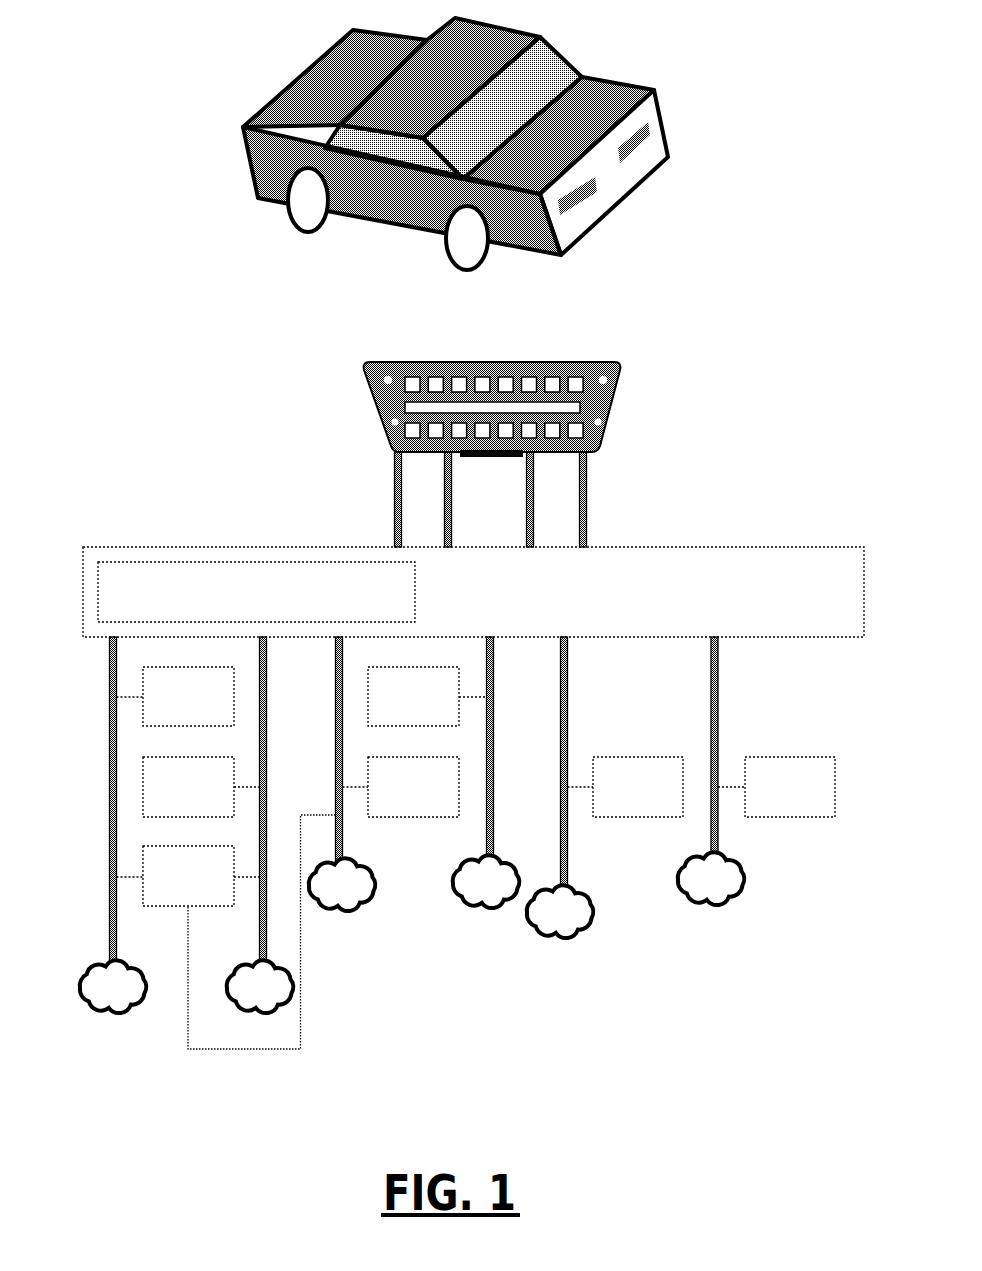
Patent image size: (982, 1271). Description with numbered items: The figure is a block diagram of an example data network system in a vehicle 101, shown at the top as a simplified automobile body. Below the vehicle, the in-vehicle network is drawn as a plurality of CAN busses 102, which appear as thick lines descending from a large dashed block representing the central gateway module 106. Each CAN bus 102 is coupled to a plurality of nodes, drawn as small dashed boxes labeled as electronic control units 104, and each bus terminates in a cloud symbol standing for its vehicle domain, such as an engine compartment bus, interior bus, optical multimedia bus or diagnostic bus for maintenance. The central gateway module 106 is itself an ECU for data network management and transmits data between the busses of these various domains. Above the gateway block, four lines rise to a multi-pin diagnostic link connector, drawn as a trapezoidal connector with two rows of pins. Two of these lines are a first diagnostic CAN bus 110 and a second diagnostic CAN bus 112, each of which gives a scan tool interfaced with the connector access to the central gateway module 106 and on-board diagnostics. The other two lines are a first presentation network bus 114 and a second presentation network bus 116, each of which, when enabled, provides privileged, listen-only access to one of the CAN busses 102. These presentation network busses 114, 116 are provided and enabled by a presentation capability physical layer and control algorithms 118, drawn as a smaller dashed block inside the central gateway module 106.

The vehicle 101 is at (558, 34).
The CAN busses 102 is at (417, 804).
The electronic control units (ECUs) 104 is at (171, 708).
The central gateway module (CGM) 106 is at (623, 603).
The first diagnostic CAN bus 110 is at (378, 499).
The second diagnostic CAN bus 112 is at (472, 499).
The first presentation network bus 114 is at (554, 499).
The second presentation network bus 116 is at (606, 497).
The presentation capability physical layer and control algorithms 118 is at (238, 603).